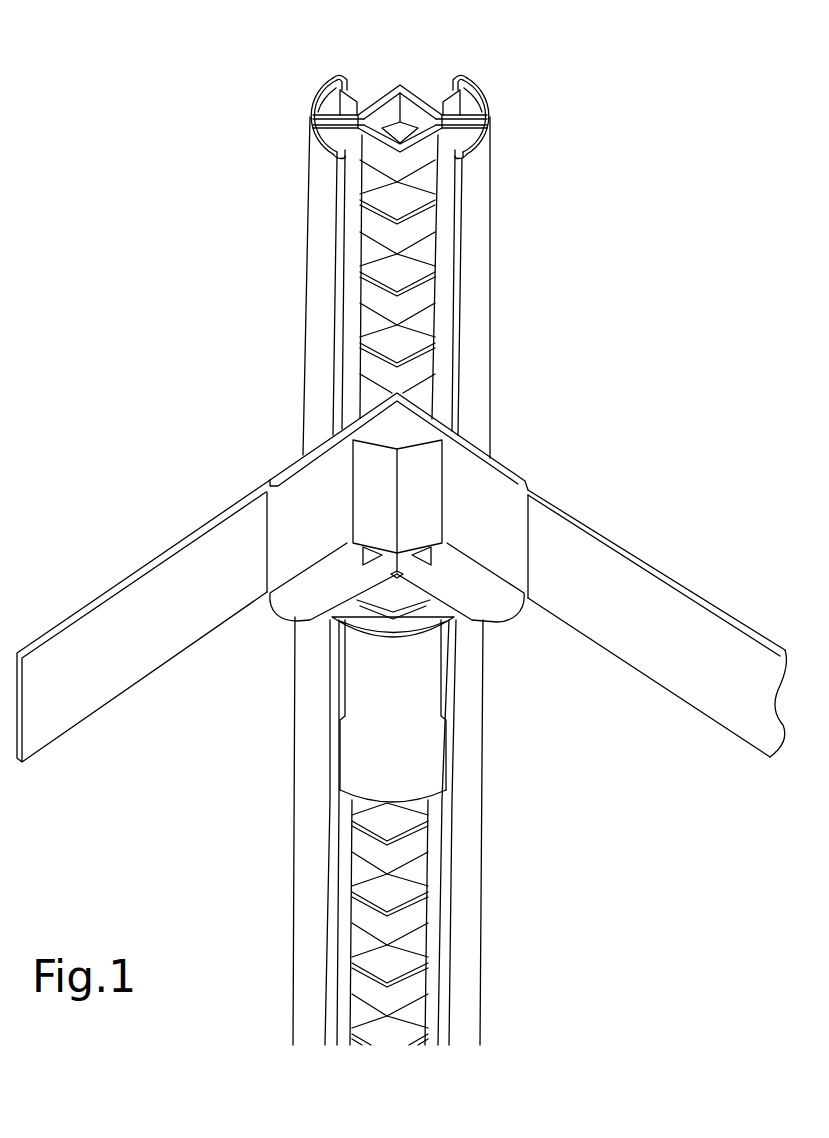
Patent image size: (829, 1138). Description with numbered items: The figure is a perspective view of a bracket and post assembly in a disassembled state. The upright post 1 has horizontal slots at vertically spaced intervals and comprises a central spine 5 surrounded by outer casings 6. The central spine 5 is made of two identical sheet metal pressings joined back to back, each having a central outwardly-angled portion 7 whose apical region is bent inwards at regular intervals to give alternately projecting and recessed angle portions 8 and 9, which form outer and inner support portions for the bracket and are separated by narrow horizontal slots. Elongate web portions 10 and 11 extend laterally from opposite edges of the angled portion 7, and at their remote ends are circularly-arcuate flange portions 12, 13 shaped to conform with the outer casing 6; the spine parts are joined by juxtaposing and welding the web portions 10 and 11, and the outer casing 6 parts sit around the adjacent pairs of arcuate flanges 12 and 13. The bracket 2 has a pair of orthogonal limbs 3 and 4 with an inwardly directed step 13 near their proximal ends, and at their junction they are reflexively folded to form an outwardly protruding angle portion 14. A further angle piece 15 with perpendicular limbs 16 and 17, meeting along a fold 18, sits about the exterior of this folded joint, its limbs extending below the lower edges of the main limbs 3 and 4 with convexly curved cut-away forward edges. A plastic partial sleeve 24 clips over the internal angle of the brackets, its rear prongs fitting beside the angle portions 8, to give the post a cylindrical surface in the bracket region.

The upright post 1 is at (503, 222).
The bracket 2 is at (565, 490).
The limb 3 is at (112, 684).
The limb 4 is at (678, 660).
The central spine 5 is at (378, 78).
The outer casing 6 is at (322, 196).
The central outwardly-angled portion 7 is at (408, 88).
The projecting angle portion 8 is at (427, 362).
The recessed angle portion 9 is at (420, 320).
The web portion 10 is at (338, 92).
The web portion 11 is at (455, 88).
The circularly-arcuate flange portion 12 is at (320, 153).
The circularly-arcuate flange portion 13 is at (478, 143).
The outwardly protruding angle portion 14 is at (362, 485).
The angle piece 15 is at (508, 465).
The limb 16 is at (290, 618).
The limb 17 is at (508, 620).
The fold 18 is at (345, 418).
The plastic partial sleeve 24 is at (415, 773).